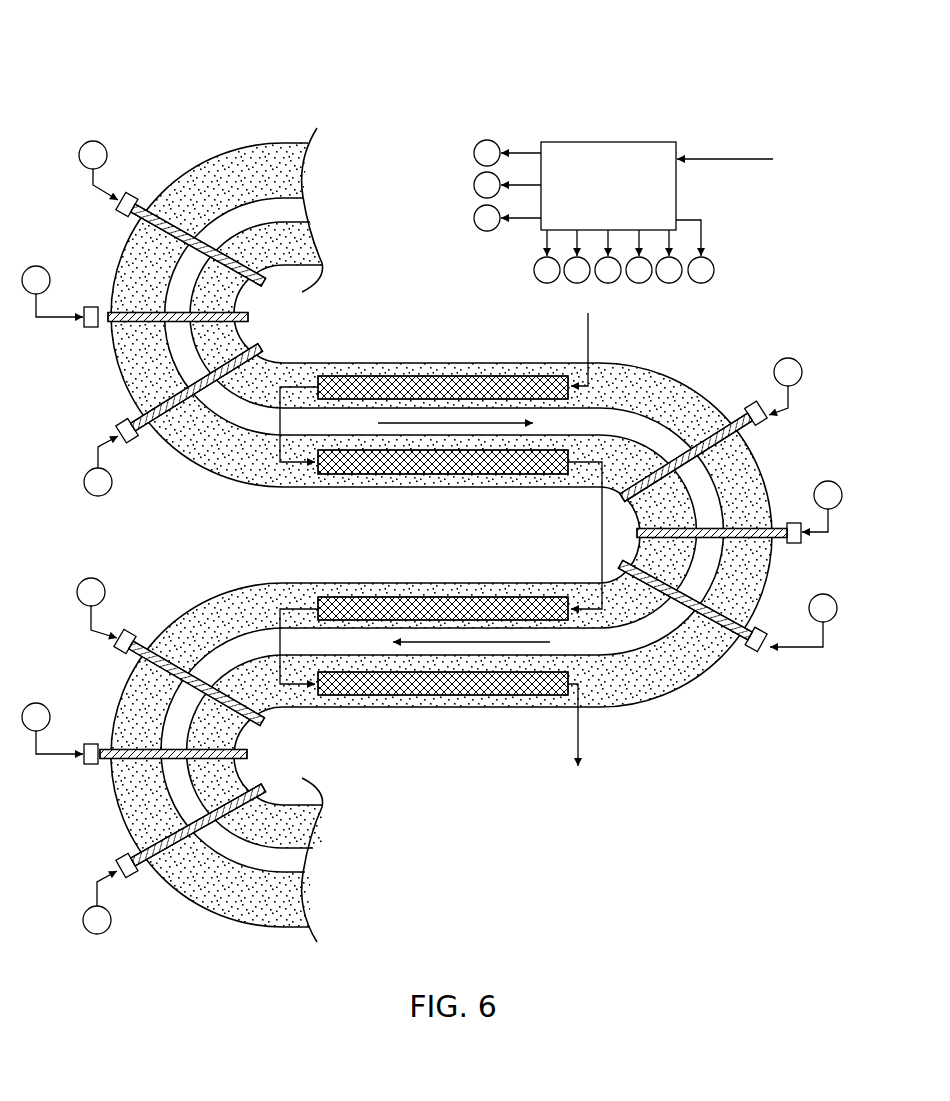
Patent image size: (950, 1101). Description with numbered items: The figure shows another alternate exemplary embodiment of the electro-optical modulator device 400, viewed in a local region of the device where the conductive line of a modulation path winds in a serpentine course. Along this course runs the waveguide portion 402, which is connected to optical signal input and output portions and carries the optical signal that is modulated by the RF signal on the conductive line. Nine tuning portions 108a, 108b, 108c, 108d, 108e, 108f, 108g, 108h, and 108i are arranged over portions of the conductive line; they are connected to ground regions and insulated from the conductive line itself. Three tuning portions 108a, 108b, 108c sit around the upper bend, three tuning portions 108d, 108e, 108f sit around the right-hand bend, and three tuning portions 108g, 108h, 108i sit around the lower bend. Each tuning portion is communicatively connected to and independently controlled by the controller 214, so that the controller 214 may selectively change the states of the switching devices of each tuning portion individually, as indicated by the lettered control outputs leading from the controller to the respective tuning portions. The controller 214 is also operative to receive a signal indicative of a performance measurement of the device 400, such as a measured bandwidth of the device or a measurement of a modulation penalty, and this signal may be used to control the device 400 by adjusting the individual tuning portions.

The electro-optical modulator device 400 is at (82, 67).
The controller 214 is at (598, 142).
The waveguide portion 402 is at (589, 331).
The tuning portion 108a is at (158, 222).
The tuning portion 108b is at (106, 315).
The tuning portion 108c is at (131, 418).
The tuning portion 108d is at (723, 440).
The tuning portion 108e is at (786, 522).
The tuning portion 108f is at (747, 628).
The tuning portion 108g is at (157, 657).
The tuning portion 108h is at (106, 750).
The tuning portion 108i is at (128, 857).